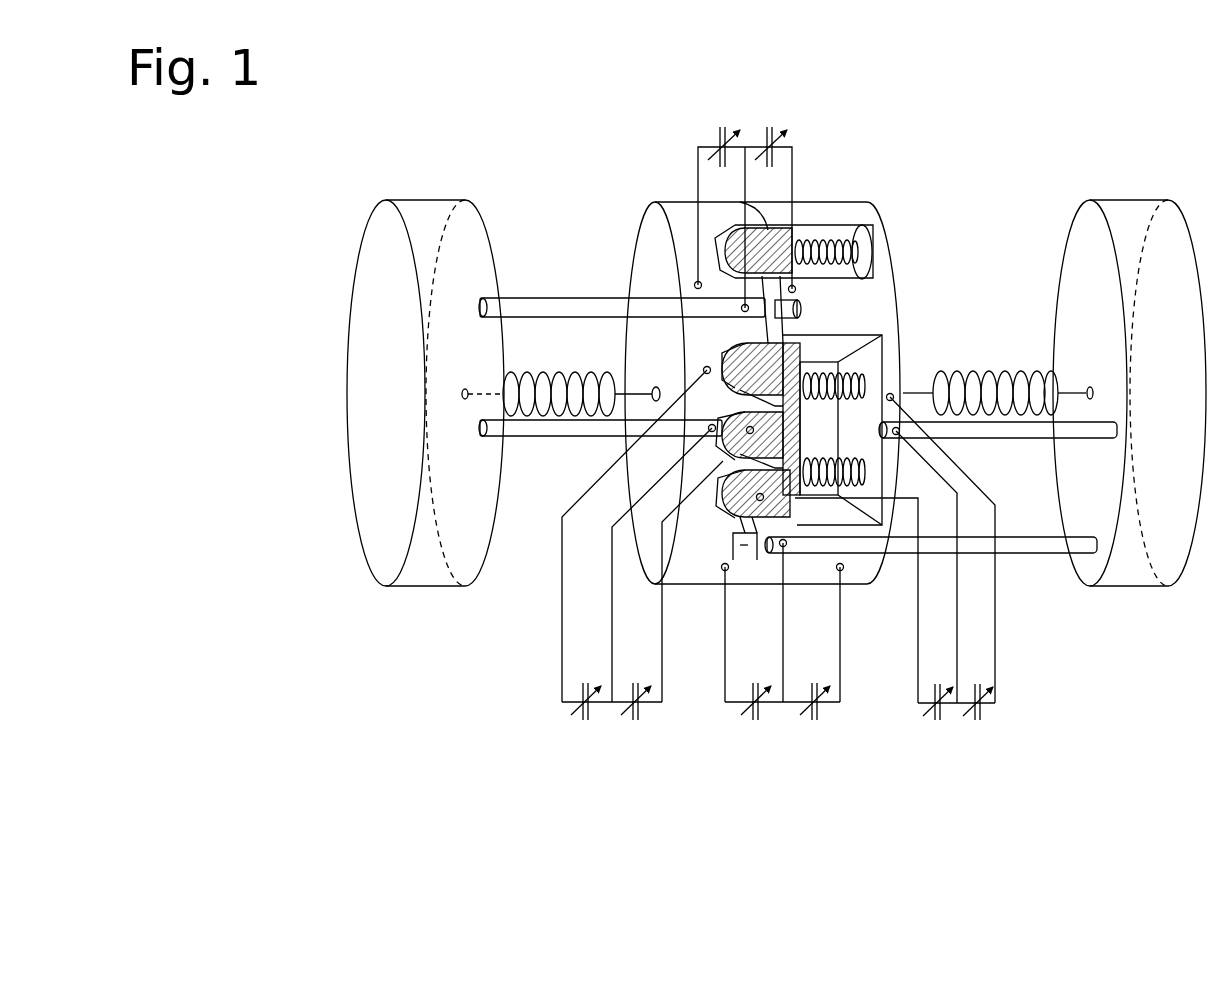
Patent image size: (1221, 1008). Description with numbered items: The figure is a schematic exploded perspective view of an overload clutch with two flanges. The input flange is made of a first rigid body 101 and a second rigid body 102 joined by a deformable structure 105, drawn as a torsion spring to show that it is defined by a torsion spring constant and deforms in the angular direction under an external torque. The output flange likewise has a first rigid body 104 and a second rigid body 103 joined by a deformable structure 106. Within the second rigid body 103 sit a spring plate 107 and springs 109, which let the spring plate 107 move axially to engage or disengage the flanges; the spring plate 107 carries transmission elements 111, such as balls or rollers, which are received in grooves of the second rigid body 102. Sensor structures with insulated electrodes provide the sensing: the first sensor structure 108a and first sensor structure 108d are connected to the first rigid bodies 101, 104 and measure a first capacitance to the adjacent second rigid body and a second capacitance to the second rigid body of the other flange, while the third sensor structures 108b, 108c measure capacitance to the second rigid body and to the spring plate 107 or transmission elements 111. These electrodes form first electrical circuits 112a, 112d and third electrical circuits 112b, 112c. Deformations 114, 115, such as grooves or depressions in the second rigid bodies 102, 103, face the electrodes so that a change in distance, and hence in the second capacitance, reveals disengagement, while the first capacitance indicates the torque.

The first rigid body 101 is at (430, 562).
The second rigid body 102 is at (703, 567).
The second rigid body 103 is at (857, 583).
The first rigid body 104 is at (1139, 567).
The deformable structure 105 is at (553, 373).
The deformable structure 106 is at (982, 373).
The spring plate 107 is at (821, 439).
The first sensor structure 108a is at (543, 310).
The third sensor structure 108b is at (585, 427).
The third sensor structure 108c is at (993, 430).
The first sensor structure 108d is at (1046, 545).
The spring 109 is at (831, 380).
The transmission element 111 is at (752, 364).
The first electrical circuit 112a is at (752, 124).
The third electrical circuit 112b is at (608, 722).
The third electrical circuit 112c is at (950, 722).
The first electrical circuit 112d is at (780, 722).
The deformation 114 is at (738, 547).
The deformation 115 is at (803, 307).